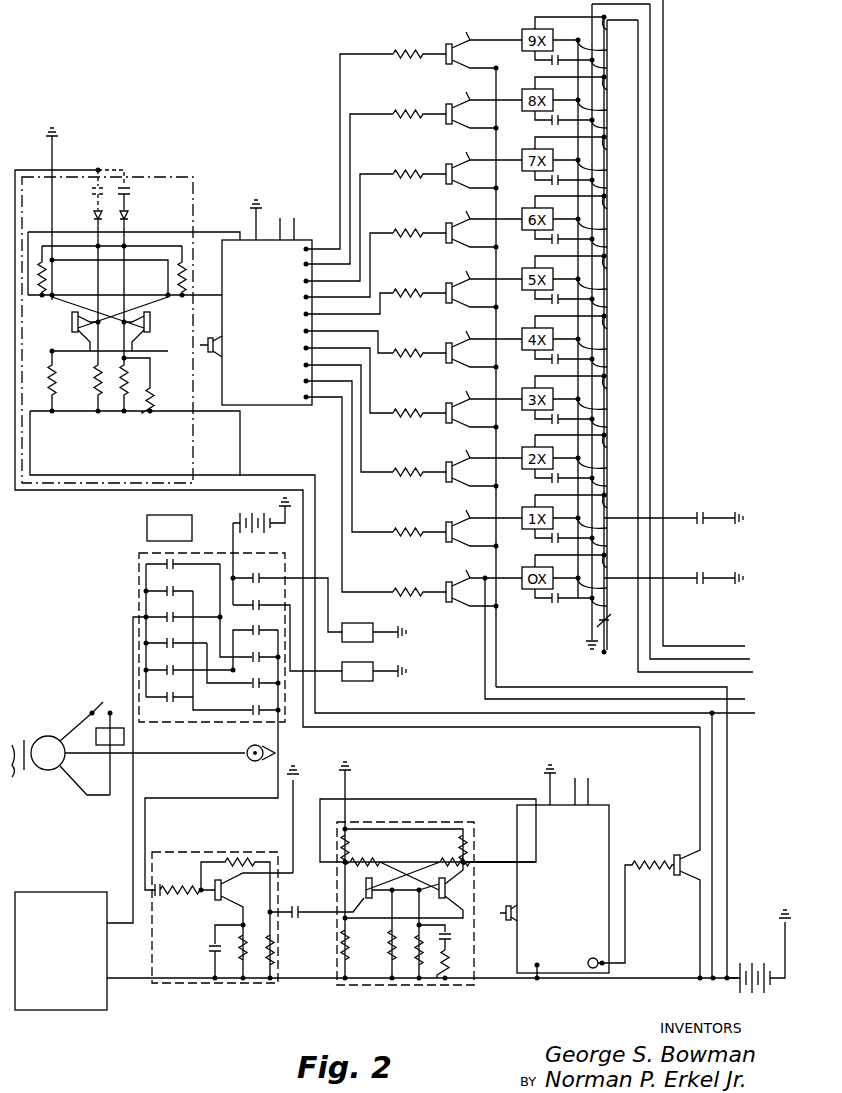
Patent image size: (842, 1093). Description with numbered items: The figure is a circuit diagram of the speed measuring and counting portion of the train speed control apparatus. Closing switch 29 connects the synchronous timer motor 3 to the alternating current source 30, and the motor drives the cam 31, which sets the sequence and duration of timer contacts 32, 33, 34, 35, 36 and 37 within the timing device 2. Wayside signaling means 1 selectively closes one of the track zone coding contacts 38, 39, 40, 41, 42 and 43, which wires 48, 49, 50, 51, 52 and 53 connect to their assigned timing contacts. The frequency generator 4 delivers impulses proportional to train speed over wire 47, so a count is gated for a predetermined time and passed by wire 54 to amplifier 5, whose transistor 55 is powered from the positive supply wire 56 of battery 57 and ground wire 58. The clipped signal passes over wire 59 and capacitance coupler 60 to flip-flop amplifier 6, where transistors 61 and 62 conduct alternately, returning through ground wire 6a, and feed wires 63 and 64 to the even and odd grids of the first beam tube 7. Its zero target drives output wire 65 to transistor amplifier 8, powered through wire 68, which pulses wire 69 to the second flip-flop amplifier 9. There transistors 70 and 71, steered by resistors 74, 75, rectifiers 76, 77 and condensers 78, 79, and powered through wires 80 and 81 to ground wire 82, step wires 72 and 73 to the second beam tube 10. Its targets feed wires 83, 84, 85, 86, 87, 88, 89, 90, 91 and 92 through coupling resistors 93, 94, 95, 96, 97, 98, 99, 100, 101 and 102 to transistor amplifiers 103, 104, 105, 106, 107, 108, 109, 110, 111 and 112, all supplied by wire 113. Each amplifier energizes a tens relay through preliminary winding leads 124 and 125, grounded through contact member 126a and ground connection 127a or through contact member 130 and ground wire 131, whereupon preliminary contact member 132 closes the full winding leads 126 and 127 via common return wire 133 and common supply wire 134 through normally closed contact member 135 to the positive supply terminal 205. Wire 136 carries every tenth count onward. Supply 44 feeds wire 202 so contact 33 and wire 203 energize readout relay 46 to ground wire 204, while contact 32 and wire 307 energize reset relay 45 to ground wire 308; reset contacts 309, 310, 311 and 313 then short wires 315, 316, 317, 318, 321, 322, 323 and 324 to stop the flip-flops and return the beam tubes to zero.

The wayside track zone signaling means 1 is at (147, 530).
The timing device 2 is at (139, 564).
The timer motor 3 is at (50, 771).
The frequency generator 4 is at (33, 892).
The amplifier 5 is at (183, 850).
The flip-flop amplifier 6 is at (370, 820).
The ground wire 6a is at (348, 781).
The first beam tube 7 is at (598, 803).
The transistor amplifier 8 is at (672, 878).
The second flip-flop amplifier 9 is at (150, 176).
The second beam tube 10 is at (282, 407).
The switch 29 is at (92, 713).
The source of alternating current 30 is at (101, 754).
The cam 31 is at (247, 760).
The timer contact 32 is at (254, 566).
The timer contact 33 is at (254, 593).
The timer contact 34 is at (254, 618).
The timer contact 35 is at (254, 645).
The timer contact 36 is at (254, 671).
The timer contact 37 is at (254, 698).
The track zone coding contact 38 is at (154, 565).
The track zone coding contact 39 is at (85, 595).
The track zone coding contact 40 is at (85, 622).
The track zone coding contact 41 is at (85, 648).
The track zone coding contact 42 is at (85, 675).
The track zone coding contact 43 is at (178, 698).
The source of supply 44 is at (248, 517).
The reset relay 45 is at (357, 632).
The readout relay 46 is at (357, 671).
The wire 47 is at (133, 840).
The wire 48 is at (186, 592).
The wire 49 is at (185, 566).
The wire 50 is at (222, 620).
The wire 51 is at (211, 660).
The wire 52 is at (182, 711).
The wire 53 is at (181, 710).
The wire 54 is at (158, 796).
The transistor 55 is at (212, 897).
The B+ wire 56 is at (295, 980).
The battery 57 is at (742, 964).
The ground wire 58 is at (293, 820).
The wire 59 is at (297, 908).
The capacitance coupler 60 is at (304, 932).
The transistor 61 is at (376, 876).
The transistor 62 is at (440, 876).
The wire 63 is at (498, 860).
The wire 64 is at (446, 798).
The output wire 65 is at (670, 862).
The wire 68 is at (700, 946).
The wire 69 is at (65, 170).
The transistor 70 is at (76, 327).
The transistor 71 is at (148, 327).
The wire 72 is at (196, 296).
The wire 73 is at (206, 234).
The resistor 74 is at (48, 272).
The resistor 75 is at (178, 272).
The rectifier 76 is at (92, 216).
The rectifier 77 is at (130, 216).
The condenser 78 is at (91, 192).
The condenser 79 is at (131, 192).
The wire 80 is at (727, 736).
The wire 81 is at (66, 476).
The ground wire 82 is at (52, 155).
The wire 83 is at (342, 576).
The wire 84 is at (352, 516).
The wire 85 is at (361, 456).
The wire 86 is at (370, 397).
The wire 87 is at (378, 340).
The wire 88 is at (380, 307).
The wire 89 is at (370, 247).
The wire 90 is at (360, 188).
The wire 91 is at (350, 128).
The wire 92 is at (340, 68).
The coupling resistor 93 is at (405, 592).
The coupling resistor 94 is at (390, 534).
The coupling resistor 95 is at (395, 474).
The coupling resistor 96 is at (401, 414).
The coupling resistor 97 is at (398, 356).
The coupling resistor 98 is at (402, 293).
The coupling resistor 99 is at (393, 233).
The coupling resistor 100 is at (393, 174).
The coupling resistor 101 is at (392, 114).
The coupling resistor 102 is at (392, 54).
The transistor amplifier 103 is at (444, 584).
The transistor amplifier 104 is at (444, 524).
The transistor amplifier 105 is at (444, 464).
The transistor amplifier 106 is at (444, 405).
The transistor amplifier 107 is at (444, 345).
The transistor amplifier 108 is at (444, 285).
The transistor amplifier 109 is at (444, 225).
The transistor amplifier 110 is at (444, 166).
The transistor amplifier 111 is at (444, 106).
The transistor amplifier 112 is at (444, 46).
The wire 113 is at (668, 240).
The lead wire 124 is at (472, 296).
The lead wire 125 is at (605, 317).
The lead wire 126 is at (618, 334).
The contact member 126a is at (704, 574).
The lead wire 127 is at (613, 337).
The ground 127a is at (708, 580).
The contact member 130 is at (704, 514).
The ground wire 131 is at (708, 520).
The preliminary contact member 132 is at (522, 612).
The common return wire 133 is at (644, 131).
The common supply wire 134 is at (650, 342).
The contact member 135 is at (623, 627).
The wire 136 is at (740, 704).
The wire 202 is at (234, 541).
The wire 203 is at (330, 652).
The ground wire 204 is at (400, 682).
The power terminal 205 is at (604, 654).
The wire 307 is at (330, 590).
The ground wire 308 is at (400, 640).
The contact member 309 is at (450, 938).
The contact member 310 is at (148, 380).
The contact member 311 is at (508, 904).
The contact member 313 is at (173, 330).
The wire 315 is at (452, 906).
The wire 316 is at (446, 970).
The wire 317 is at (148, 366).
The wire 318 is at (152, 396).
The wire 321 is at (512, 904).
The wire 322 is at (514, 919).
The wire 323 is at (214, 343).
The wire 324 is at (214, 348).